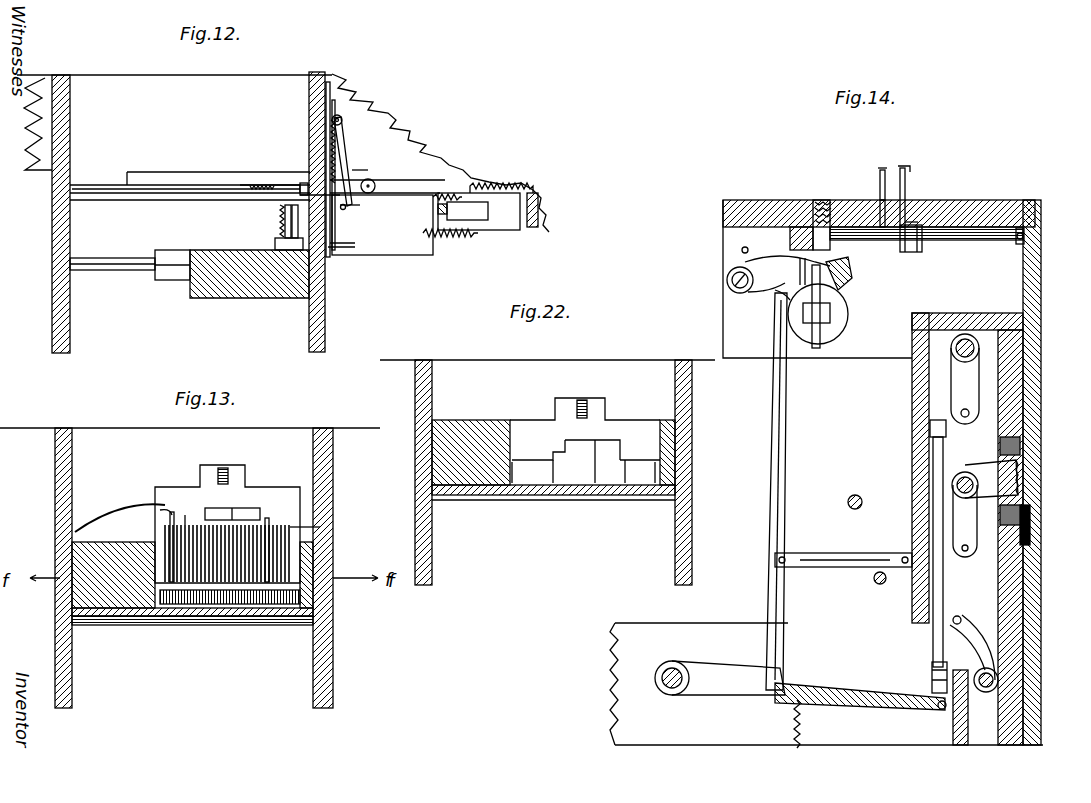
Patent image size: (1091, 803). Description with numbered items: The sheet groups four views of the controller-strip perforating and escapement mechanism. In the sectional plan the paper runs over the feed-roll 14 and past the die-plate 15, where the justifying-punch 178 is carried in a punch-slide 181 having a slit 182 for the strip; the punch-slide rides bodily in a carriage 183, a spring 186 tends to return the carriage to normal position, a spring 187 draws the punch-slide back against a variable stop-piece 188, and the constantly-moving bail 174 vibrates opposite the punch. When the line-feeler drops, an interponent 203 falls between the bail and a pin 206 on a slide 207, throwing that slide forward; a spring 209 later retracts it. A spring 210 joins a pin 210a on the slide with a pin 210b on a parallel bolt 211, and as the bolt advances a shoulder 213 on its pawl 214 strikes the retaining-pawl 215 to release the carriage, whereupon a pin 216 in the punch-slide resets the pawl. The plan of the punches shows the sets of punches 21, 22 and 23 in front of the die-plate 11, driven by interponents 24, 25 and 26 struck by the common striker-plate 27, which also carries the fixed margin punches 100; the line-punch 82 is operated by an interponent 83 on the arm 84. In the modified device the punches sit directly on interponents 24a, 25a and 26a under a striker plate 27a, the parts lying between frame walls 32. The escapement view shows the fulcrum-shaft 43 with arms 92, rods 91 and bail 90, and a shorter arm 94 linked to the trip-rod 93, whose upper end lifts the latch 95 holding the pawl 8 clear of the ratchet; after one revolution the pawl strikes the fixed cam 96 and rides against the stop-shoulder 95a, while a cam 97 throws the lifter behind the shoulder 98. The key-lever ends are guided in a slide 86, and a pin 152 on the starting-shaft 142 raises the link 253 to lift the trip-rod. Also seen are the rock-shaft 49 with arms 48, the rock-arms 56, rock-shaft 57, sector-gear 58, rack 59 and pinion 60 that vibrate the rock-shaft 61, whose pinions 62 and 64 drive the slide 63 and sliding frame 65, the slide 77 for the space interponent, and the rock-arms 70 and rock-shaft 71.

In FIG. 12, the bail 174 is at (190, 164).
In FIG. 12, the interponent 203 is at (285, 185).
In FIG. 12, the spring 209 is at (303, 183).
In FIG. 12, the slide 207 is at (326, 112).
In FIG. 12, the bolt 211 is at (336, 104).
In FIG. 12, the pawl 214 is at (340, 140).
In FIG. 12, the pin 210b is at (342, 118).
In FIG. 12, the shoulder 213 is at (348, 178).
In FIG. 12, the spring 210 is at (356, 146).
In FIG. 12, the retaining-pawl 215 is at (405, 186).
In FIG. 12, the pin 216 is at (355, 219).
In FIG. 12, the pin 210a is at (361, 206).
In FIG. 12, the punch-slide 181 is at (366, 225).
In FIG. 12, the spring 187 is at (462, 240).
In FIG. 12, the carriage 183 is at (512, 228).
In FIG. 12, the variable stop-piece 188 is at (463, 211).
In FIG. 12, the spring 186 is at (520, 185).
In FIG. 12, the justifying-punch 178 is at (278, 215).
In FIG. 12, the pin 206 is at (311, 220).
In FIG. 12, the slit 182 is at (275, 241).
In FIG. 12, the die-plate 15 is at (208, 295).
In FIG. 12, the feed-roll 14 is at (170, 282).
In FIG. 12, the frame wall 32 is at (70, 333).
In FIG. 13, the frame wall 32 is at (333, 655).
In FIG. 22, the frame wall 32 is at (432, 575).
In FIG. 13, the die-plate 11 is at (200, 620).
In FIG. 22, the die-plate 11 is at (582, 500).
In FIG. 13, the fixed punches 100 is at (160, 618).
In FIG. 22, the fixed punches 100 is at (524, 497).
In FIG. 13, the striker-plate 27 is at (258, 490).
In FIG. 13, the punches 21 is at (180, 532).
In FIG. 13, the interponent 24 is at (185, 543).
In FIG. 14, the interponent 24 is at (887, 173).
In FIG. 13, the punches 22 is at (225, 515).
In FIG. 13, the interponent 25 is at (237, 503).
In FIG. 14, the interponent 25 is at (905, 172).
In FIG. 13, the interponent 26 is at (270, 526).
In FIG. 13, the punches 23 is at (320, 527).
In FIG. 13, the line-punch 82 is at (170, 522).
In FIG. 13, the interponent 83 is at (168, 508).
In FIG. 13, the arm 84 is at (112, 517).
In FIG. 22, the striker plate 27a is at (615, 425).
In FIG. 22, the interponent 24a is at (552, 462).
In FIG. 22, the interponent 25a is at (600, 460).
In FIG. 22, the interponent 26a is at (627, 470).
In FIG. 14, the bail 90 is at (912, 408).
In FIG. 14, the rock-shaft 61 is at (982, 242).
In FIG. 14, the pinion 64 is at (808, 218).
In FIG. 14, the sliding frame 65 is at (822, 204).
In FIG. 14, the slide 77 is at (880, 210).
In FIG. 14, the pinion 62 is at (905, 250).
In FIG. 14, the slide 63 is at (910, 222).
In FIG. 14, the pinion 60 is at (1024, 245).
In FIG. 14, the latch 95 is at (778, 270).
In FIG. 14, the stop-shoulder 95a is at (806, 268).
In FIG. 14, the fixed cam 96 is at (850, 273).
In FIG. 14, the pawl 8 is at (822, 296).
In FIG. 14, the cam 97 is at (838, 322).
In FIG. 14, the shoulder 98 is at (780, 292).
In FIG. 14, the trip-rod 93 is at (774, 486).
In FIG. 14, the rock-shaft 49 is at (980, 354).
In FIG. 14, the arms 48 is at (980, 394).
In FIG. 14, the rock-shaft 57 is at (952, 484).
In FIG. 14, the sector-gear 58 is at (991, 479).
In FIG. 14, the rock-arms 56 is at (972, 527).
In FIG. 14, the vertical rack 59 is at (1030, 497).
In FIG. 14, the rods 91 is at (945, 580).
In FIG. 14, the link 253 is at (853, 553).
In FIG. 14, the pin 152 is at (865, 576).
In FIG. 14, the starting-shaft 142 is at (880, 585).
In FIG. 14, the shorter arm 94 is at (720, 678).
In FIG. 14, the fulcrum-rod 43 is at (670, 695).
In FIG. 14, the arms 92 is at (858, 690).
In FIG. 14, the slide 86 is at (968, 712).
In FIG. 14, the rock-arms 70 is at (975, 640).
In FIG. 14, the rock-shaft 71 is at (998, 680).